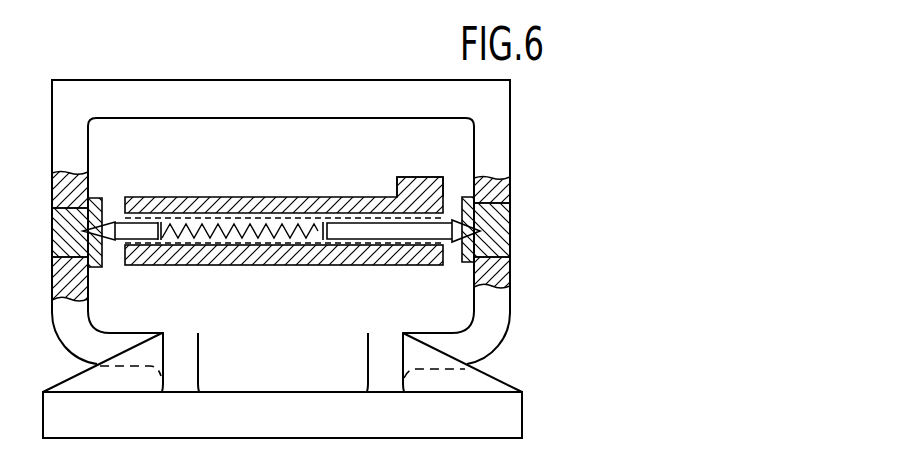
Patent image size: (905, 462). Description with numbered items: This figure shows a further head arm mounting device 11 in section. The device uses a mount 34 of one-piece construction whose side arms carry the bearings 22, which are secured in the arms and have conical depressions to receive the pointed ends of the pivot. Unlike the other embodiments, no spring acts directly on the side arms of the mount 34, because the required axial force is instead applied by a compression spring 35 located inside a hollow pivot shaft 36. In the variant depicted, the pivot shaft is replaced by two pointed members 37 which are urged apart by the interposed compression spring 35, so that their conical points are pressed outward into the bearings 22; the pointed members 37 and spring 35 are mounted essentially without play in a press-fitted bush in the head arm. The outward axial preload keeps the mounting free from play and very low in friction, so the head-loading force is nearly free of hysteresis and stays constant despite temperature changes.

The head arm mounting device 11 is at (295, 65).
The bearings 22 is at (513, 218).
The mount 34 is at (175, 98).
The compression spring 35 is at (190, 203).
The hollow pivot shaft 36 is at (317, 197).
The pointed members 37 is at (368, 228).